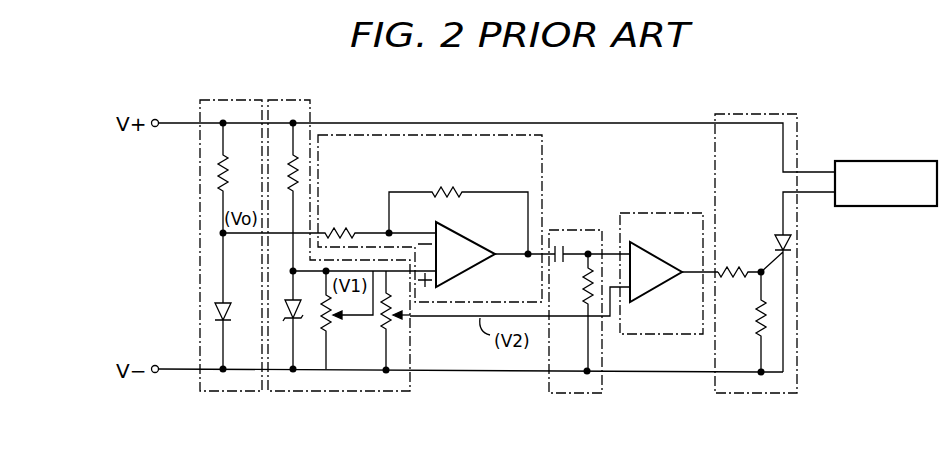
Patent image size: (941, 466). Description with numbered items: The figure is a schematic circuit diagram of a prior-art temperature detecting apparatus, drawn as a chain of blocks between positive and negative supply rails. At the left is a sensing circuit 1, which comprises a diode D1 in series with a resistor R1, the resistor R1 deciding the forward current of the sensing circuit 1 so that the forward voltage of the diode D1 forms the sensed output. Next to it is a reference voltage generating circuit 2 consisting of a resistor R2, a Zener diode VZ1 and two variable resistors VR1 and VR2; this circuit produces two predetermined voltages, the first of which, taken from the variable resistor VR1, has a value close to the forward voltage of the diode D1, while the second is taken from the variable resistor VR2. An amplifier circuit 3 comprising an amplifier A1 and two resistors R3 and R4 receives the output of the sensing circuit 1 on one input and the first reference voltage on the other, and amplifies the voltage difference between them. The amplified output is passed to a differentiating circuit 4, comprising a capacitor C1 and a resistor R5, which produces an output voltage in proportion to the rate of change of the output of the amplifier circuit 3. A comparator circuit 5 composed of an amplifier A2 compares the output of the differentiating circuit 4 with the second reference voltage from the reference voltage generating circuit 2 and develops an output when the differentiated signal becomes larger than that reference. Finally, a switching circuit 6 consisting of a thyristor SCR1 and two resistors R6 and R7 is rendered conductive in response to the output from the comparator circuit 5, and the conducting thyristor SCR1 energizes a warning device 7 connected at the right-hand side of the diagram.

The sensing circuit 1 is at (215, 391).
The reference voltage generating circuit 2 is at (345, 391).
The amplifier circuit 3 is at (415, 135).
The differentiating circuit 4 is at (560, 393).
The comparator circuit 5 is at (650, 213).
The switching circuit 6 is at (730, 393).
The warning device 7 is at (878, 160).
The resistor R1 is at (224, 160).
The resistor R2 is at (296, 165).
The resistor R3 is at (333, 225).
The resistor R4 is at (442, 188).
The resistor R5 is at (585, 305).
The resistor R6 is at (735, 265).
The resistor R7 is at (766, 318).
The diode D1 is at (225, 300).
The Zener diode VZ1 is at (301, 322).
The variable resistor VR1 is at (330, 325).
The variable resistor VR2 is at (390, 323).
The amplifier A1 is at (465, 235).
The amplifier A2 is at (664, 258).
The capacitor C1 is at (562, 244).
The thyristor SCR1 is at (791, 242).